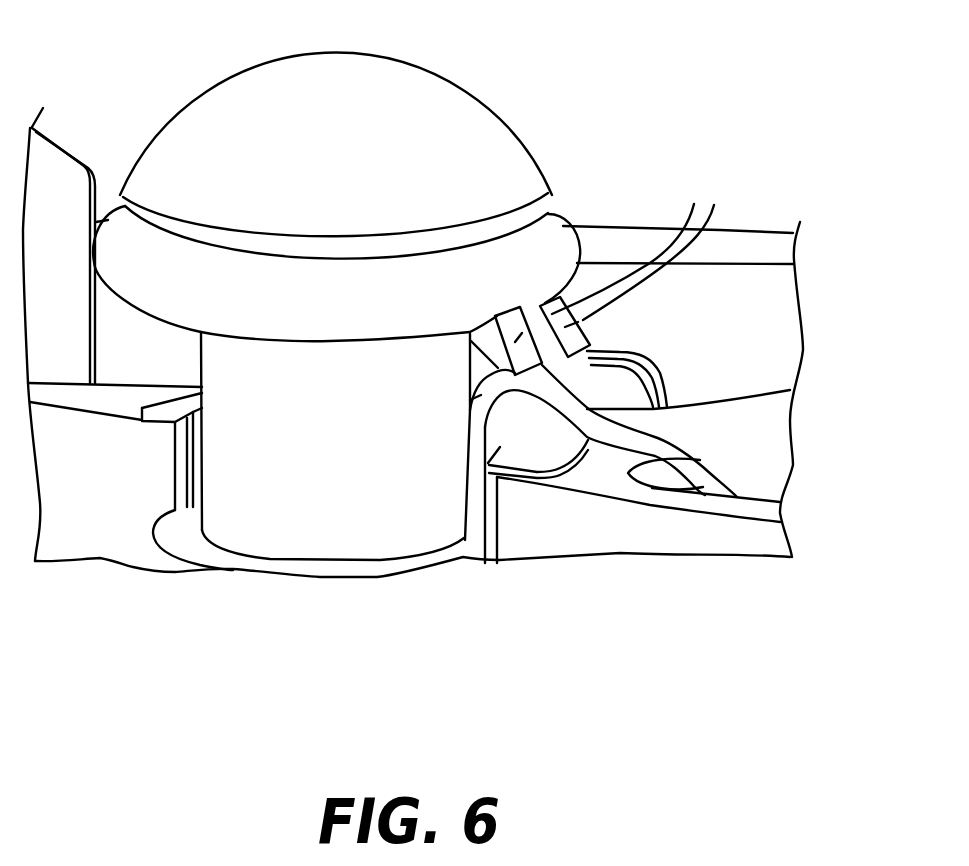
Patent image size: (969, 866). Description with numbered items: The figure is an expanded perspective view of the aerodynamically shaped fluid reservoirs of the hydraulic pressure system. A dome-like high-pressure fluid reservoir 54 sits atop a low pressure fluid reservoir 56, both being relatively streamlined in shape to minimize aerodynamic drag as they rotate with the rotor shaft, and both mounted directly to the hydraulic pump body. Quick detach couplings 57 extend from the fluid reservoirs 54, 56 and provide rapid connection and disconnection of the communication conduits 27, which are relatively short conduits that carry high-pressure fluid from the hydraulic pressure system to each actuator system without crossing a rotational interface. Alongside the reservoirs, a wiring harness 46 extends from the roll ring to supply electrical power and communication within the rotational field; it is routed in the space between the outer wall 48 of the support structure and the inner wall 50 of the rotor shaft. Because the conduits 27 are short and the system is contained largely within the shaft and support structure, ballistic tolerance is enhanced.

The communication conduit 27 is at (663, 362).
The wiring harness 46 is at (472, 472).
The outer wall 48 is at (500, 447).
The inner wall 50 is at (492, 530).
The high-pressure fluid reservoir 54 is at (467, 120).
The low pressure fluid reservoir 56 is at (563, 217).
The quick detach coupling 57 is at (694, 204).